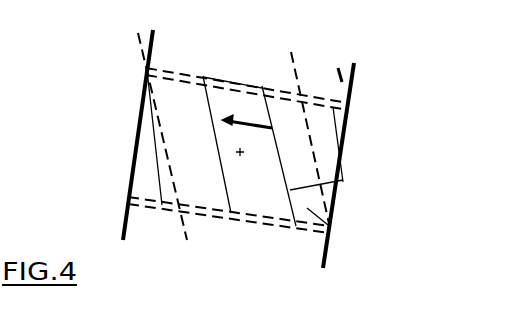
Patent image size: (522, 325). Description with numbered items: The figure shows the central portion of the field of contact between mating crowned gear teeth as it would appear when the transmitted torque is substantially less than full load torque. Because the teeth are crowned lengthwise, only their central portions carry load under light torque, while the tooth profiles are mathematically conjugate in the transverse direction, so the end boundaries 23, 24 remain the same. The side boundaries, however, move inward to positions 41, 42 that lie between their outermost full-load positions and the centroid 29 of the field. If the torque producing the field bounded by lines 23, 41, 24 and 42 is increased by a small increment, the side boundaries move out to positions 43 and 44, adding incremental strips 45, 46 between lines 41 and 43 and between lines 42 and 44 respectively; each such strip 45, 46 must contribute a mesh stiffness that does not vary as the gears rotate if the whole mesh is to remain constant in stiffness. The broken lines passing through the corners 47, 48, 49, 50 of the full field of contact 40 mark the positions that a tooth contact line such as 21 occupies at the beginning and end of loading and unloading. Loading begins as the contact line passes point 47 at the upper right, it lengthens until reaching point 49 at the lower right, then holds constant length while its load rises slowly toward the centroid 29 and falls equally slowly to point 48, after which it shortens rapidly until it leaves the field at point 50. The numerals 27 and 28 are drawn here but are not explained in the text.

The tooth contact line 21 is at (153, 130).
The end boundary 23 is at (338, 210).
The end boundary 24 is at (128, 200).
The right electrode 27 is at (338, 140).
The left electrode 28 is at (146, 71).
The centroid 29 is at (240, 158).
The full field of contact 40 is at (336, 234).
The side boundary 41 is at (263, 86).
The side boundary 42 is at (260, 222).
The side boundary 43 is at (148, 70).
The side boundary 44 is at (155, 208).
The incremental strip 45 is at (214, 74).
The incremental strip 46 is at (208, 215).
The corner 47 is at (352, 100).
The corner 48 is at (142, 64).
The corner 49 is at (355, 110).
The corner 50 is at (126, 205).